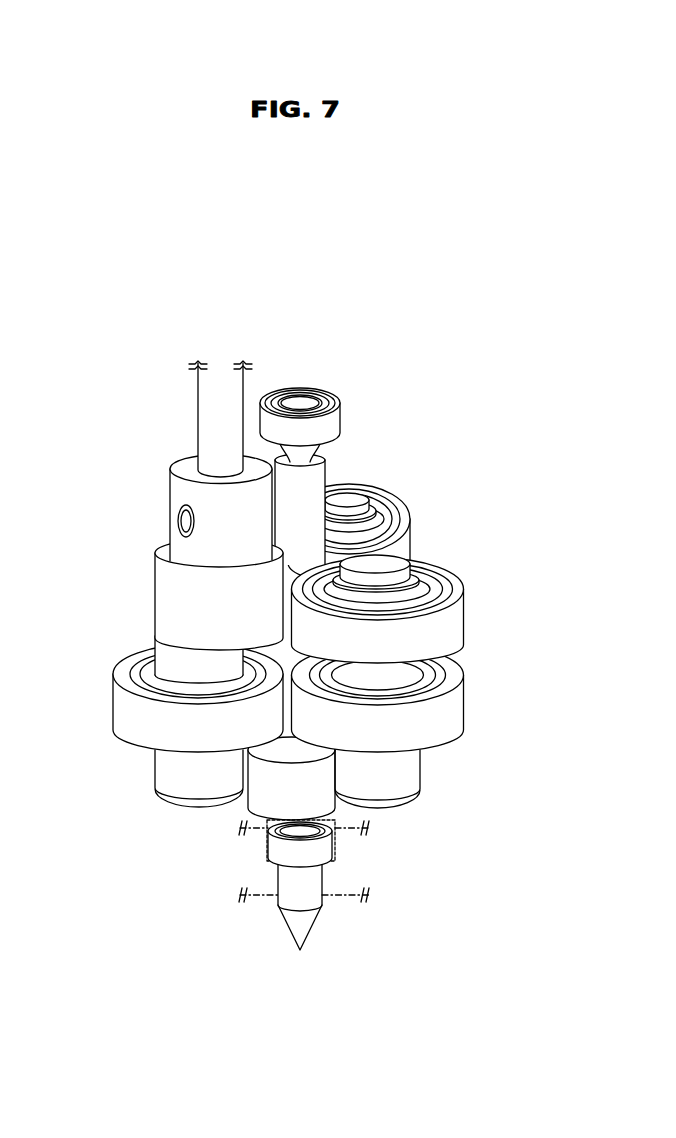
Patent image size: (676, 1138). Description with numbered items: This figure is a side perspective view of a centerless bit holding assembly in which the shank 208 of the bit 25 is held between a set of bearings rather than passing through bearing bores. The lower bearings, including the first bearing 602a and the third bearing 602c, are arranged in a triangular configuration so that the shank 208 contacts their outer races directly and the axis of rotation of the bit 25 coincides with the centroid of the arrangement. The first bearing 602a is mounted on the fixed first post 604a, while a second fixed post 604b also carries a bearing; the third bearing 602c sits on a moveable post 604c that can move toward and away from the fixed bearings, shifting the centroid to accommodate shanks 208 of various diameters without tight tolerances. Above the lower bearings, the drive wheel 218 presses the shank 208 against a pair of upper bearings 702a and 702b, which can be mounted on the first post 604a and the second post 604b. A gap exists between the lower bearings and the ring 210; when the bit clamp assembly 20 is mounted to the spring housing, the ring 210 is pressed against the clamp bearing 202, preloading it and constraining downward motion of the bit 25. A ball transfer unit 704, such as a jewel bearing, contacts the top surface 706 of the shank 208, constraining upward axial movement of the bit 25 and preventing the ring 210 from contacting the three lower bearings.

The bit clamp assembly 20 is at (350, 860).
The bit 25 is at (292, 935).
The clamp bearing 202 is at (280, 848).
The shank 208 is at (295, 540).
The ring 210 is at (268, 798).
The drive wheel 218 is at (157, 572).
The first bearing 602a is at (456, 718).
The third bearing 602c is at (118, 712).
The first post 604a is at (402, 558).
The second post 604b is at (350, 500).
The moveable post 604c is at (155, 772).
The upper bearing 702a is at (456, 618).
The upper bearing 702b is at (402, 513).
The ball transfer unit 704 is at (340, 407).
The top surface 706 is at (326, 455).